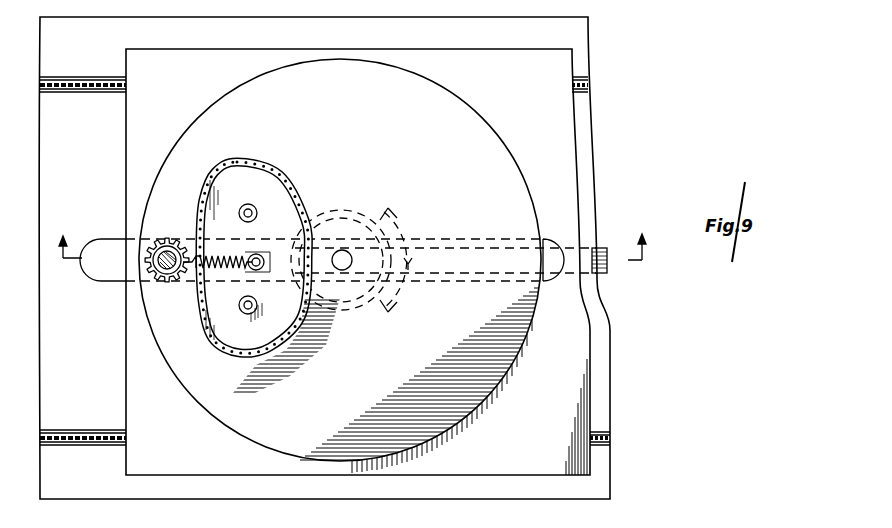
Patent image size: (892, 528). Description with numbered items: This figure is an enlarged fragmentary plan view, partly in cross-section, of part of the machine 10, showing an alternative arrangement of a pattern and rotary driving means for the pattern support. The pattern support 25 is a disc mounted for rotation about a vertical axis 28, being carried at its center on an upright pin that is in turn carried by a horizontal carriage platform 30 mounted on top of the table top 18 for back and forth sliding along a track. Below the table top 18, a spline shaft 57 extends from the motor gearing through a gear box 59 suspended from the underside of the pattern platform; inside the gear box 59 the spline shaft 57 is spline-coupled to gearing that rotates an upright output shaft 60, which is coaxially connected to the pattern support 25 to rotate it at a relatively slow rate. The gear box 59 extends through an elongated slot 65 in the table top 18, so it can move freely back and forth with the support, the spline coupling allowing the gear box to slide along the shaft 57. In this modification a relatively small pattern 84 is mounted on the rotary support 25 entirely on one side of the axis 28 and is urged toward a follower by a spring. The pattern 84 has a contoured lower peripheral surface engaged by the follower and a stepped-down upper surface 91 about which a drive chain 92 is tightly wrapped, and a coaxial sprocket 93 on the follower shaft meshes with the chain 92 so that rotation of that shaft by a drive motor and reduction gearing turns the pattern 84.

The machine 10 is at (367, 238).
The table top 18 is at (590, 497).
The pattern support 25 is at (482, 120).
The vertical axis 28 is at (344, 250).
The carriage platform 30 is at (522, 468).
The spline shaft 57 is at (606, 249).
The gear box 59 is at (365, 305).
The output shaft 60 is at (342, 262).
The elongated slot 65 is at (103, 287).
The pattern 84 is at (258, 222).
The stepped-down upper surface 91 is at (300, 188).
The drive chain 92 is at (293, 168).
The sprocket 93 is at (173, 283).